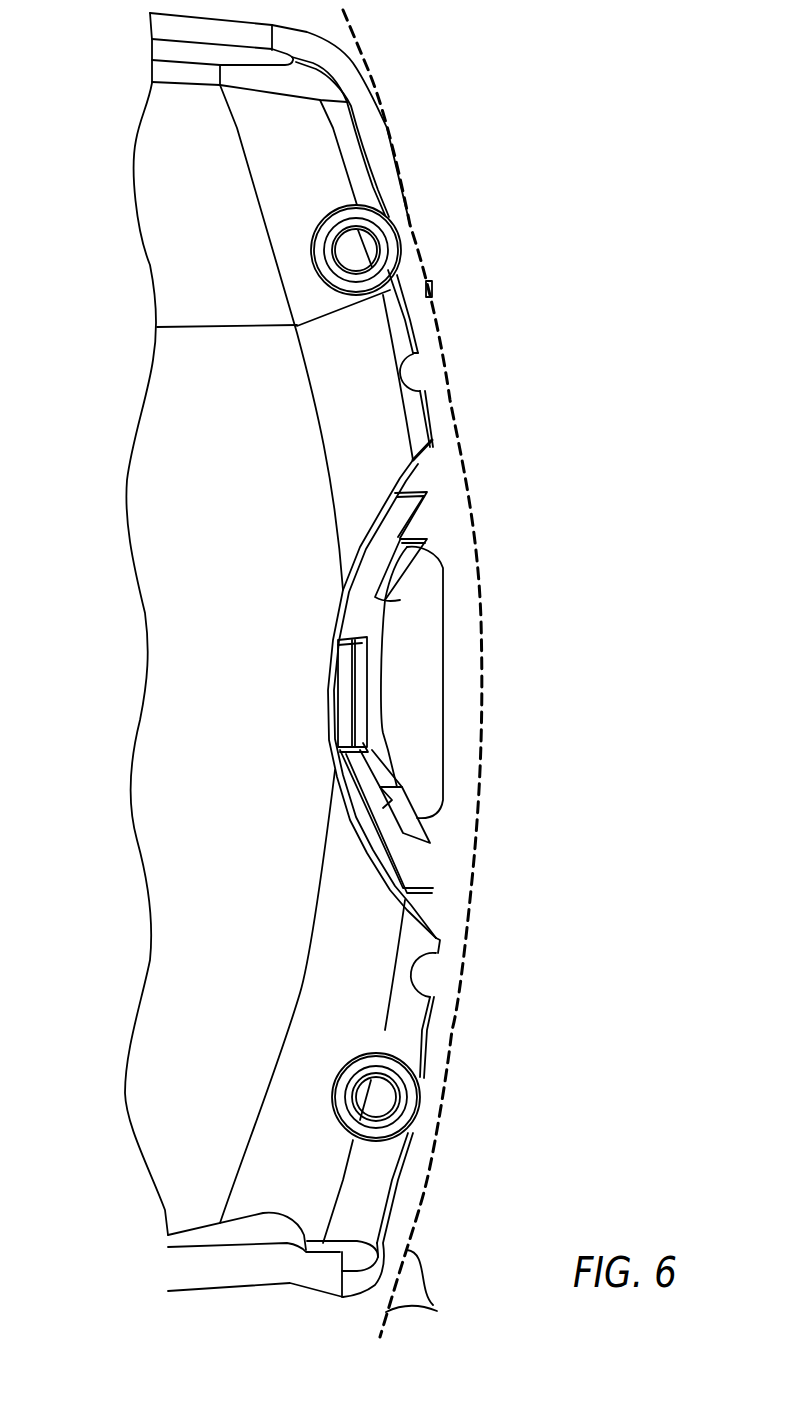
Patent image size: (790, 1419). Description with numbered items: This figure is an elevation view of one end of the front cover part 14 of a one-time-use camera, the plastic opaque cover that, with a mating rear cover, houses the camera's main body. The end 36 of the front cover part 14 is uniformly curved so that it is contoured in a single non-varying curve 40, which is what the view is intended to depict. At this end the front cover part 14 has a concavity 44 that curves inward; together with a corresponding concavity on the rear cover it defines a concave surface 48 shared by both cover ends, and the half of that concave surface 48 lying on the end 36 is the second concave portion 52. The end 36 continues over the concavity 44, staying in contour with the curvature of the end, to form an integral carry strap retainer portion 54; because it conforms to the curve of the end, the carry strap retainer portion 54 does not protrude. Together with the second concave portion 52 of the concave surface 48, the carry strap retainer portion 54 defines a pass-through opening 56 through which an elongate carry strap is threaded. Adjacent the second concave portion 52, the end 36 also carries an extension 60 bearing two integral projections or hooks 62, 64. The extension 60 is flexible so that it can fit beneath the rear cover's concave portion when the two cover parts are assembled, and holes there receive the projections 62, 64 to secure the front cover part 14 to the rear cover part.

The front cover part 14 is at (125, 951).
The end 36 is at (403, 1200).
The non-varying curve 40 is at (430, 1289).
The concavity 44 is at (383, 713).
The concave surface 48 is at (390, 750).
The second concave portion 52 is at (382, 690).
The carry strap retainer portion 54 is at (480, 597).
The pass-through opening 56 is at (422, 593).
The extension 60 is at (337, 695).
The projection 62 is at (420, 528).
The projection 64 is at (417, 817).